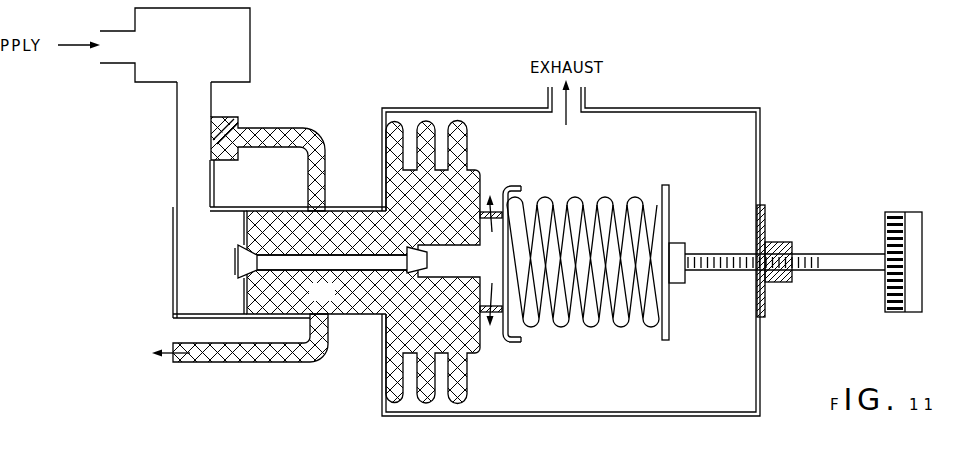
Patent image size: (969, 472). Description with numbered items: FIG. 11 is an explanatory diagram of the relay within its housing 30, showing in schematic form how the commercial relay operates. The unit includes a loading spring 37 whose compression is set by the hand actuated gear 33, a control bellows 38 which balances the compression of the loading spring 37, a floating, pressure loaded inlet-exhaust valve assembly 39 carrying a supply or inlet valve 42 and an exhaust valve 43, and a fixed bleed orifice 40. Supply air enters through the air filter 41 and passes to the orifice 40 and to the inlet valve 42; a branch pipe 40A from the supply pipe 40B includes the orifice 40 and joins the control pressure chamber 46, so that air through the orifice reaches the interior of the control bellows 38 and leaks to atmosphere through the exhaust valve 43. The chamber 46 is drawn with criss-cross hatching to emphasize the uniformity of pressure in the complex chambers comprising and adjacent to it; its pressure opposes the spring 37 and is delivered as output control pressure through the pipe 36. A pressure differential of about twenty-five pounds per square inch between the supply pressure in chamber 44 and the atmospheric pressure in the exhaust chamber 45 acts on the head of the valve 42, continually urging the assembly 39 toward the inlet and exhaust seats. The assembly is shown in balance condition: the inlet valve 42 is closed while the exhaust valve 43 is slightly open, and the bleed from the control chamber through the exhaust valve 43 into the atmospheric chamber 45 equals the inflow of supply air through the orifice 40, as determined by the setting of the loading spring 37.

The housing 30 is at (801, 172).
The hand actuated gear 33 is at (905, 212).
The pipe 36 is at (265, 362).
The loading spring 37 is at (612, 186).
The control bellows 38 is at (430, 107).
The inlet-exhaust valve assembly 39 is at (337, 264).
The bleed orifice 40 is at (229, 127).
The branch pipe 40A is at (326, 150).
The supply pipe 40B is at (213, 183).
The air filter 41 is at (204, 68).
The inlet valve 42 is at (236, 248).
The exhaust valve 43 is at (408, 292).
The chamber 44 is at (241, 262).
The exhaust chamber 45 is at (633, 381).
The chamber 46 is at (316, 262).